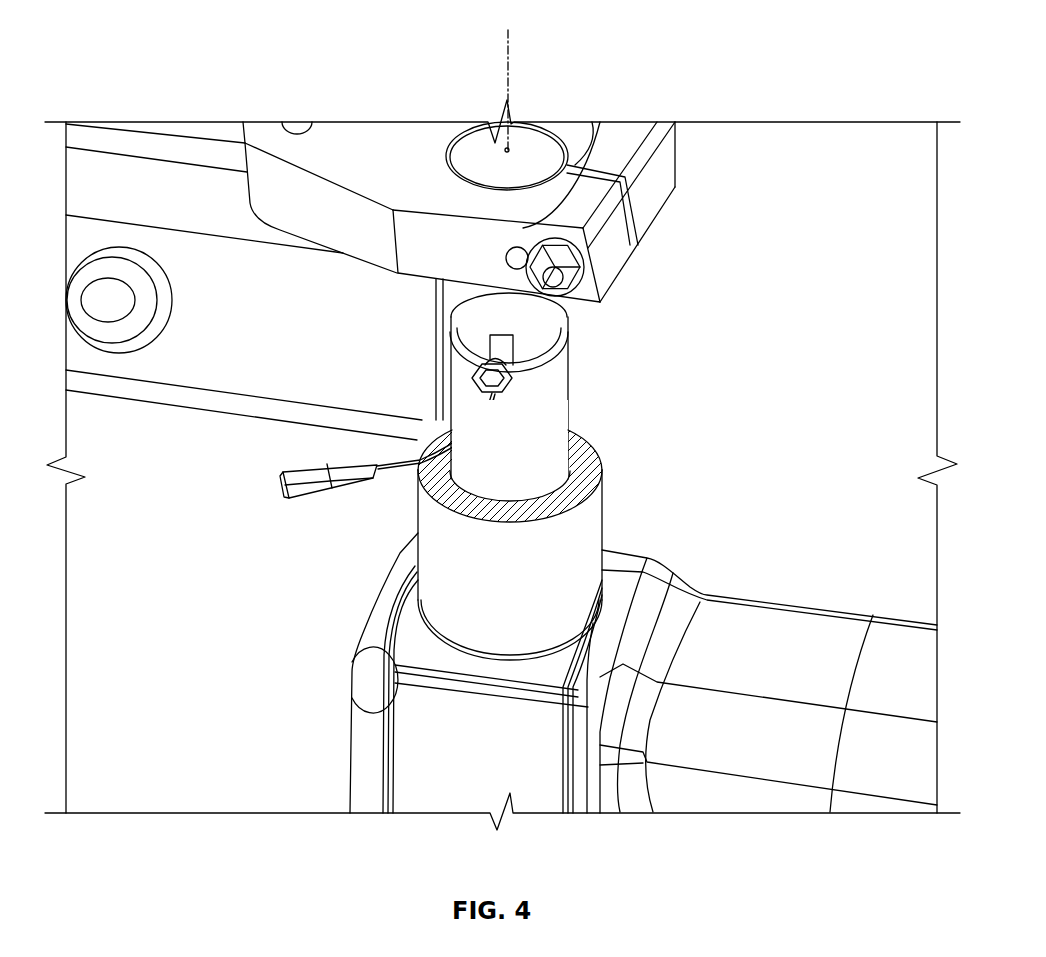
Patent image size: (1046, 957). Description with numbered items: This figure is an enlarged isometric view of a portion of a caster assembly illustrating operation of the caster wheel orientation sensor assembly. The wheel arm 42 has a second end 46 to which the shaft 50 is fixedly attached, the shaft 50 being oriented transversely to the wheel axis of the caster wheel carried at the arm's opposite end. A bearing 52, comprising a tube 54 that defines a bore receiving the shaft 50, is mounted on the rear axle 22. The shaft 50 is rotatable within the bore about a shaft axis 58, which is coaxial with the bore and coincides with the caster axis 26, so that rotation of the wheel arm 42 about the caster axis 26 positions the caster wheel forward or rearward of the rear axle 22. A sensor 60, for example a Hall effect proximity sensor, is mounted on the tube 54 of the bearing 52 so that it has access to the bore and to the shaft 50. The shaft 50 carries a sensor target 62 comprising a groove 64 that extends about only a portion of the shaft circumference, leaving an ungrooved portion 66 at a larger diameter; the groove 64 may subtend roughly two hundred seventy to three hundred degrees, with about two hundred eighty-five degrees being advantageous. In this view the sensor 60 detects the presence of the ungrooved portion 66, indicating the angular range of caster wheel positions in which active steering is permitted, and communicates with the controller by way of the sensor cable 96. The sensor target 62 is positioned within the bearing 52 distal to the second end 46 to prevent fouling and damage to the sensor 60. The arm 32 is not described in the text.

The rear axle 22 is at (193, 382).
The caster axis 26 is at (530, 104).
The shaft axis 58 is at (508, 50).
The support arm 32 is at (637, 188).
The sensor target 62 is at (476, 160).
The ungrooved portion 66 is at (450, 325).
The sensor 60 is at (488, 348).
The groove 64 is at (570, 323).
The shaft 50 is at (532, 386).
The bearing 52 is at (522, 530).
The tube 54 is at (605, 522).
The wheel arm 42 is at (908, 637).
The second end 46 is at (352, 738).
The sensor cable 96 is at (305, 498).